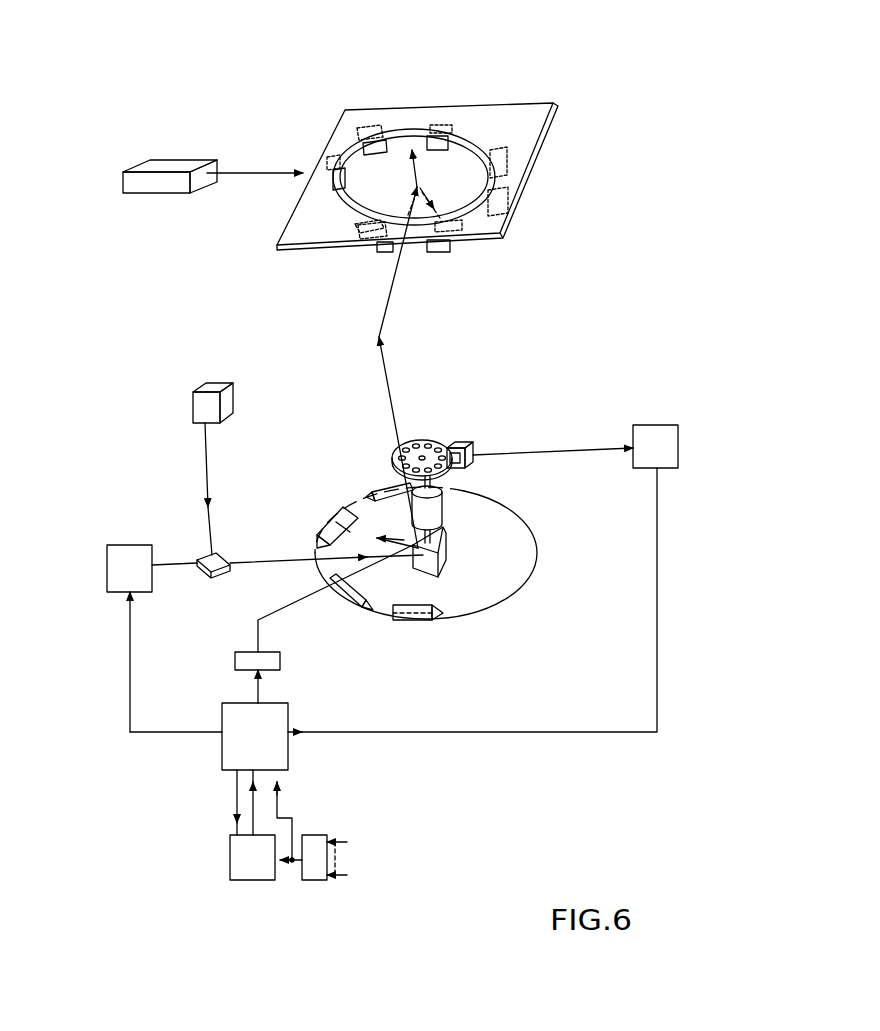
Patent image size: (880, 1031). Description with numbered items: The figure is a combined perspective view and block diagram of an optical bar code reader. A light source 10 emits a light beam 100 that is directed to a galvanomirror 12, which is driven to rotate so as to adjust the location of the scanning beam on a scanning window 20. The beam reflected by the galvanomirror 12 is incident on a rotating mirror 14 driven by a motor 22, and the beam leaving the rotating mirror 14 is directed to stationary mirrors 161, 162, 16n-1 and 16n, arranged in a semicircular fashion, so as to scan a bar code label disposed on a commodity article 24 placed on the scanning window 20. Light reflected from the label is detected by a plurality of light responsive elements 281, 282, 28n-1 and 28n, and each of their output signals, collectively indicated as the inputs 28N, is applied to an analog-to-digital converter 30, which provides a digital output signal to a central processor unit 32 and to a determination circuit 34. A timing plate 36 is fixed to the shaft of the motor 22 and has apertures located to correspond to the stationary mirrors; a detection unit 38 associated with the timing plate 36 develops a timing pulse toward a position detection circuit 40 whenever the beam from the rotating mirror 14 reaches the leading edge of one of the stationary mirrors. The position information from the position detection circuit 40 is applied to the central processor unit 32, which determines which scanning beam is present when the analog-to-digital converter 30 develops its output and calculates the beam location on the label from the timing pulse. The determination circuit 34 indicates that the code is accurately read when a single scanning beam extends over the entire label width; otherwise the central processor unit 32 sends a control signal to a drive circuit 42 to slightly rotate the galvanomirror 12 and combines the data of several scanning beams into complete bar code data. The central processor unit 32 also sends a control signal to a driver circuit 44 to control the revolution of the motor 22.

The light source 10 is at (232, 412).
The galvanomirror 12 is at (222, 580).
The rotating mirror 14 is at (447, 560).
The stationary mirror 16n is at (387, 483).
The stationary mirror 16n-1 is at (323, 523).
The stationary mirror 161 is at (423, 620).
The stationary mirror 162 is at (348, 607).
The scanning window 20 is at (473, 160).
The motor 22 is at (443, 513).
The commodity article 24 is at (155, 195).
The light responsive element 28n is at (340, 162).
The light responsive element 281 is at (375, 128).
The light responsive element 282 is at (443, 127).
The light responsive element 28n-1 is at (353, 190).
The light responsive element 28N is at (369, 863).
The analog-to-digital converter 30 is at (317, 868).
The central processor unit 32 is at (290, 757).
The determination circuit 34 is at (232, 847).
The timing plate 36 is at (428, 442).
The detection unit 38 is at (475, 447).
The position detection circuit 40 is at (675, 433).
The drive circuit 42 is at (117, 567).
The driver circuit 44 is at (250, 667).
The light beam 100 is at (207, 473).